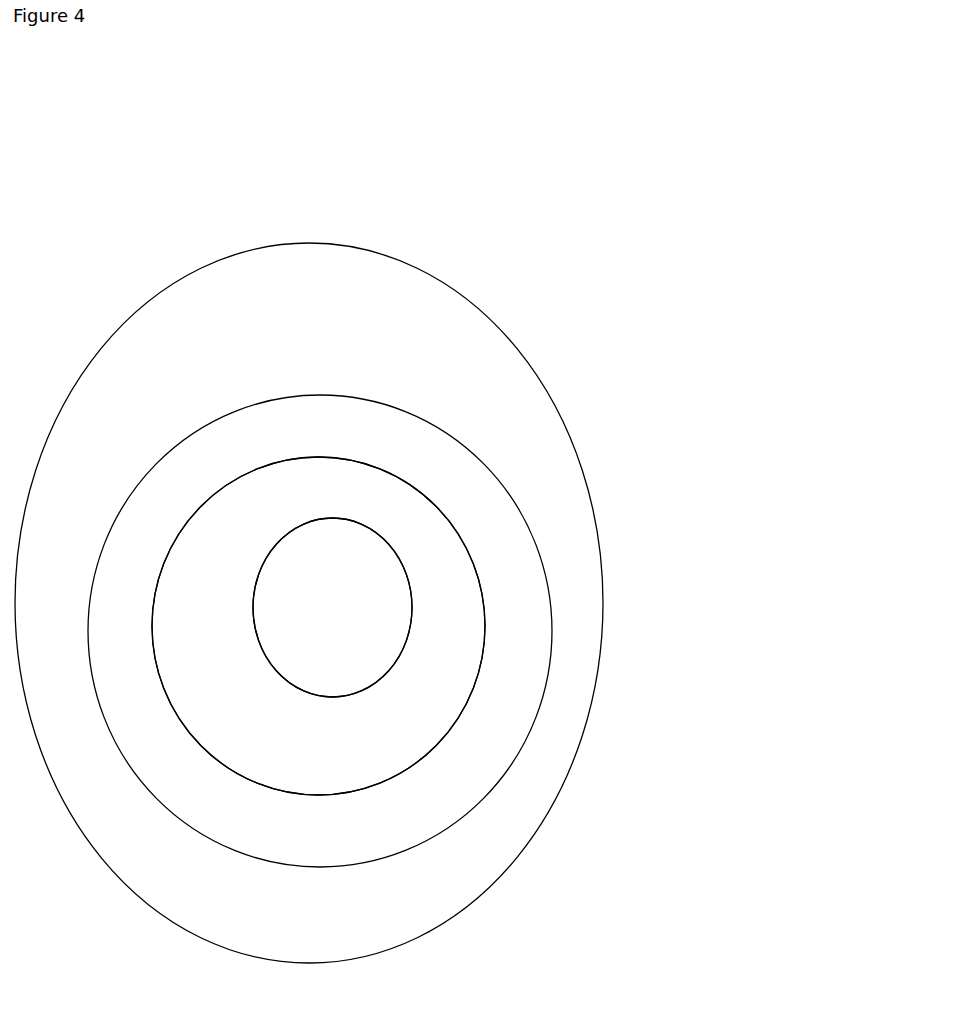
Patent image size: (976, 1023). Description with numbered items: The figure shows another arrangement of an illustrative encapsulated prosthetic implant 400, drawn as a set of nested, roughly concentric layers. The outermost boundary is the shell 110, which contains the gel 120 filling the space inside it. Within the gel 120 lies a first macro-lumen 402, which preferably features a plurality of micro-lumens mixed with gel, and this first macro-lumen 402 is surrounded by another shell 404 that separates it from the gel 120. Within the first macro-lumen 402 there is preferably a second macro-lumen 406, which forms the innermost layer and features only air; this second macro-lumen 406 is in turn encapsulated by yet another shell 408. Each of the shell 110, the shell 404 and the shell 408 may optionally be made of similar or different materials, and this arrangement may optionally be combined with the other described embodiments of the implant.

The encapsulated prosthetic implant 400 is at (449, 531).
The shell 110 is at (325, 603).
The gel 120 is at (385, 618).
The shell 404 is at (423, 626).
The first macro-lumen 402 is at (428, 626).
The shell 408 is at (502, 621).
The second macro-lumen 406 is at (568, 700).